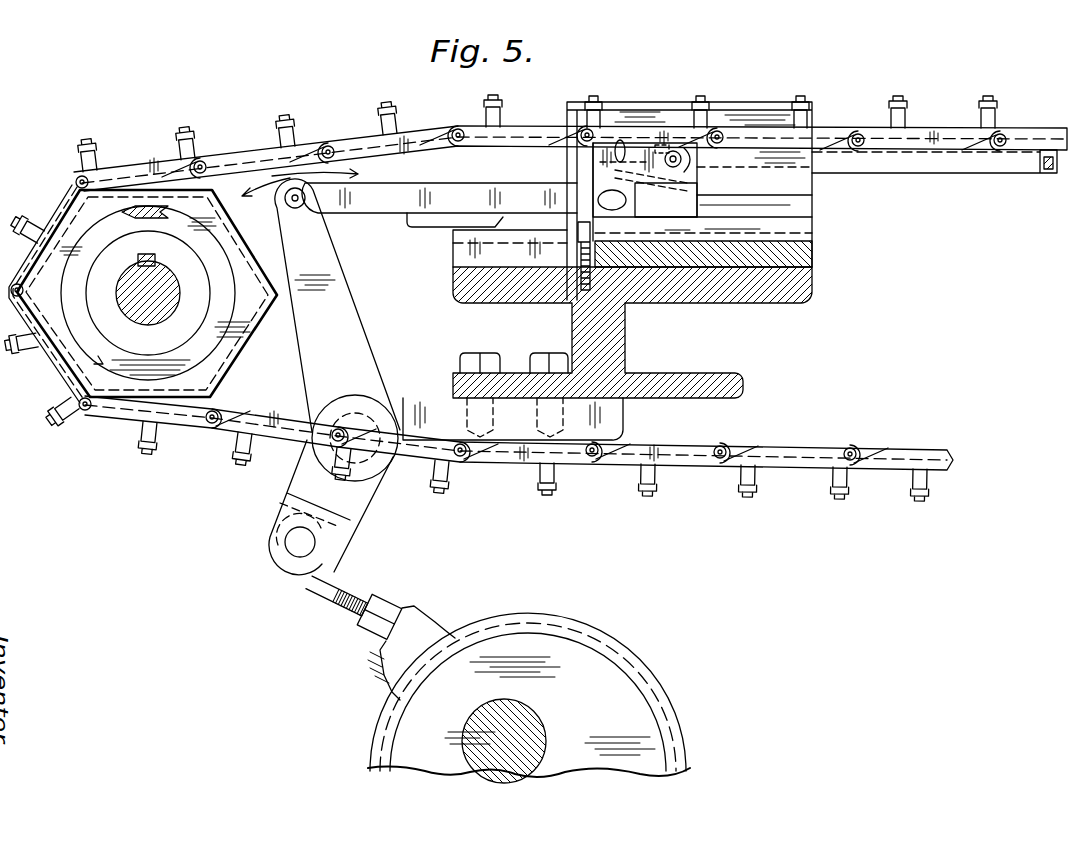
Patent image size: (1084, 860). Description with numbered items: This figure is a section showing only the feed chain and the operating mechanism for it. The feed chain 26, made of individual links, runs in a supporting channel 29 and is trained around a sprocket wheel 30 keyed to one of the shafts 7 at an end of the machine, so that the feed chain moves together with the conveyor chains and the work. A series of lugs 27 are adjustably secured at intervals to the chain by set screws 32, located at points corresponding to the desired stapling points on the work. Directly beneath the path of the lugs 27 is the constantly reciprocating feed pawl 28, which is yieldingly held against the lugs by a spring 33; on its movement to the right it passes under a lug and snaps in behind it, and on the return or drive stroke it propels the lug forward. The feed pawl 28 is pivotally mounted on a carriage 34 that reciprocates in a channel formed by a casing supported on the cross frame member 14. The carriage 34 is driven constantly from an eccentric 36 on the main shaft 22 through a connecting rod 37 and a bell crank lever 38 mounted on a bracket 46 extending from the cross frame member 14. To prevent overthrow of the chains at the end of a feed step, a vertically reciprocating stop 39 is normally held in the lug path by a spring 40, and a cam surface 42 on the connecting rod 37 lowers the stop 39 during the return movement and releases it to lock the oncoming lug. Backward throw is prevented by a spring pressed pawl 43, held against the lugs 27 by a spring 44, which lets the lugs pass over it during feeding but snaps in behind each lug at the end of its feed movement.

The shaft 7 is at (143, 300).
The cross frame member 14 is at (575, 333).
The main shaft 22 is at (510, 743).
The feed chain 26 is at (348, 152).
The lug 27 is at (395, 130).
The feed pawl 28 is at (645, 158).
The supporting channel 29 is at (1023, 163).
The sprocket wheel 30 is at (230, 338).
The set screw 32 is at (907, 108).
The spring 33 is at (728, 184).
The carriage 34 is at (697, 162).
The eccentric 36 is at (455, 636).
The connecting rod 37 is at (422, 196).
The bell crank lever 38 is at (365, 340).
The stop 39 is at (583, 160).
The spring 40 is at (572, 300).
The cam surface 42 is at (452, 222).
The pawl 43 is at (667, 145).
The spring 44 is at (700, 181).
The bracket 46 is at (420, 410).